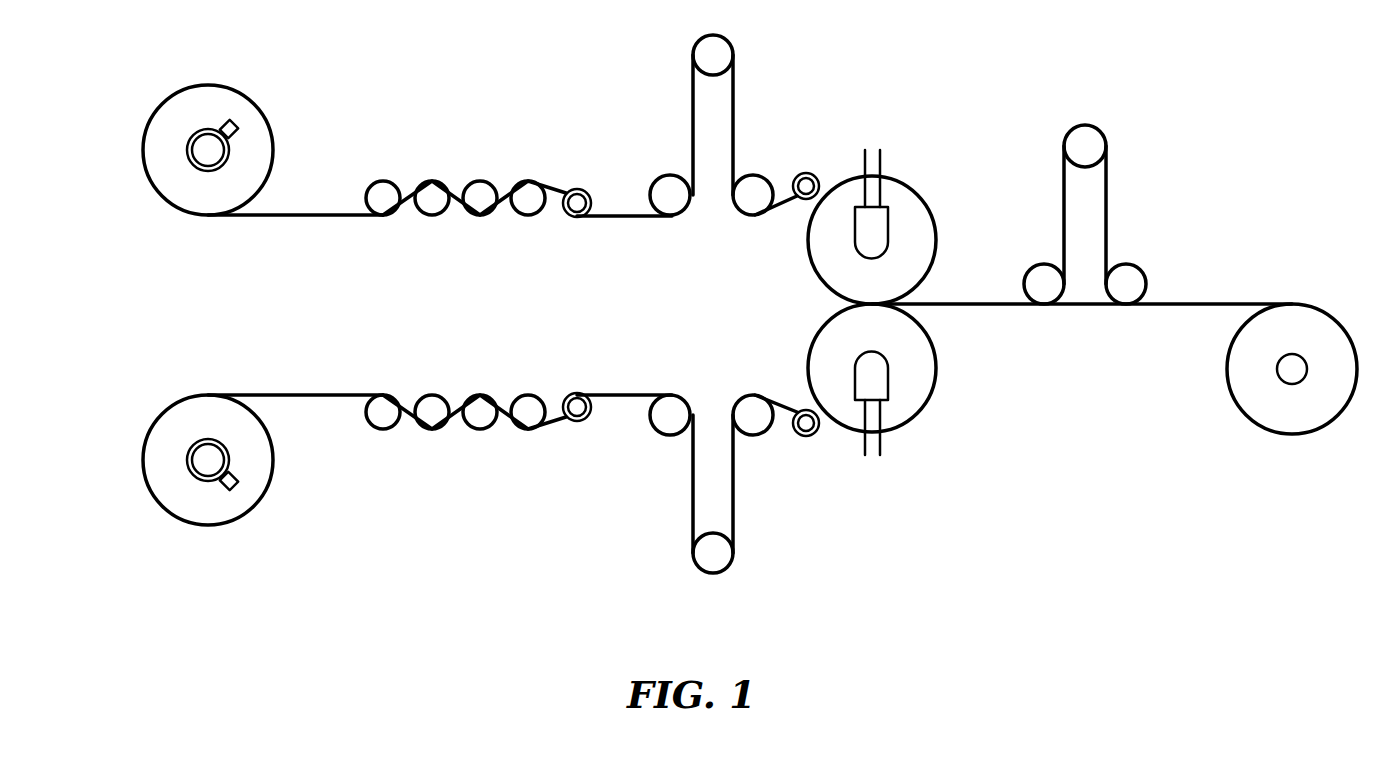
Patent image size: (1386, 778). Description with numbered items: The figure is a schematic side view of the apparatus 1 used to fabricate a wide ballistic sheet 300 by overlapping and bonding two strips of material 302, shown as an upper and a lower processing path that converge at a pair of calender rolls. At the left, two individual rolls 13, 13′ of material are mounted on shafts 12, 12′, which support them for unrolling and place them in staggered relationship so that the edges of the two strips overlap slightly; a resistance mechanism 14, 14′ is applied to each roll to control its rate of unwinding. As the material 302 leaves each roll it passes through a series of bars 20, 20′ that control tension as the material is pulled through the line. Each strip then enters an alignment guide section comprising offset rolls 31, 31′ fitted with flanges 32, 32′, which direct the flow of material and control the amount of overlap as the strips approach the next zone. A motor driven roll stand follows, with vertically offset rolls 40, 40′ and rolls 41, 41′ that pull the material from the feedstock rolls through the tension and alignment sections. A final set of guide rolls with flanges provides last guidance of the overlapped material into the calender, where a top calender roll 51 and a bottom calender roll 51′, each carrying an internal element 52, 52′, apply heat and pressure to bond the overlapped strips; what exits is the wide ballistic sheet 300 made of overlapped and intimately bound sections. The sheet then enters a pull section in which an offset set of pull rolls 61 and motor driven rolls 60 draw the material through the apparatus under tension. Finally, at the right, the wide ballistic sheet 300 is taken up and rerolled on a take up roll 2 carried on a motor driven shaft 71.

The individual roll of material 1 is at (278, 213).
The take-up roll 2 is at (1228, 368).
The shaft 12 is at (195, 167).
The supply roll 13 is at (192, 138).
The resistance mechanism 14 is at (233, 124).
The bars 20 is at (483, 181).
The offset rolls 31 is at (590, 193).
The flanges 32 is at (570, 192).
The vertically offset rolls 40 is at (678, 208).
The rolls 41 is at (700, 42).
The calender roll 51 is at (933, 212).
The heater 52 is at (878, 166).
The rolls 60 is at (1031, 273).
The pull rolls 61 is at (1092, 133).
The shaft 71 is at (1292, 384).
The wide ballistic sheet 300 is at (1217, 302).
The material 302 is at (338, 213).
The shaft 12′ is at (193, 478).
The supply roll 13′ is at (193, 442).
The resistance mechanism 14′ is at (237, 483).
The bars 20′ is at (482, 430).
The offset rolls 31′ is at (588, 413).
The flanges 32′ is at (570, 418).
The vertically offset rolls 40′ is at (672, 398).
The rolls 41′ is at (700, 570).
The calender roll 51′ is at (1010, 362).
The heater 52′ is at (878, 444).